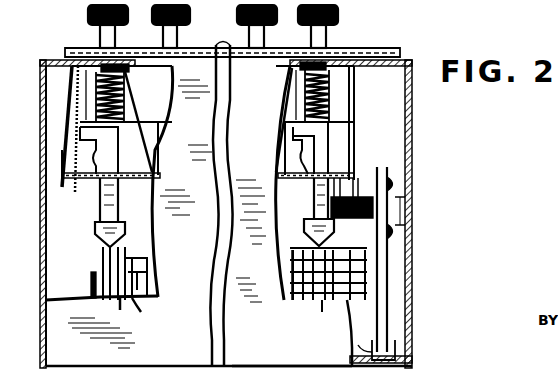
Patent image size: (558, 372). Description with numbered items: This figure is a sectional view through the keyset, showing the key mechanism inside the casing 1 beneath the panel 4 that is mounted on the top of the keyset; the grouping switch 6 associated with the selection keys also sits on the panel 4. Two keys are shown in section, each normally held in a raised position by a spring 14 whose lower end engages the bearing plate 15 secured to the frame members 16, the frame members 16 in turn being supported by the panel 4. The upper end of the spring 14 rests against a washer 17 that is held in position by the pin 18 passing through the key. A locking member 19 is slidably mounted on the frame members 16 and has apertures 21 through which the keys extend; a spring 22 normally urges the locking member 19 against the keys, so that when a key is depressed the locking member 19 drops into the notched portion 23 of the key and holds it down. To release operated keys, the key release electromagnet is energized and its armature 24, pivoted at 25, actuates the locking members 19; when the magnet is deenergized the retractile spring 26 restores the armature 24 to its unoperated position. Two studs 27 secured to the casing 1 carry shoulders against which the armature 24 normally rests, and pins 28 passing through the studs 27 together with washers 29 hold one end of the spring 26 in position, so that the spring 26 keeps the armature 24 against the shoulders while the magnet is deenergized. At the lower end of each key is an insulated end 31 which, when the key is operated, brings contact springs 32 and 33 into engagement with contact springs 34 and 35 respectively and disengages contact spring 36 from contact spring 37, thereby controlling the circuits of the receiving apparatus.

The keyset casing 1 is at (414, 118).
The panel 4 is at (248, 50).
The grouping switch 6 is at (80, 50).
The spring 14 is at (126, 95).
The bearing plate 15 is at (138, 113).
The frame members 16 is at (371, 111).
The washer 17 is at (187, 95).
The pin 18 is at (128, 69).
The locking member 19 is at (229, 160).
The apertures 21 is at (118, 178).
The spring 22 is at (62, 157).
The notched portion 23 is at (204, 148).
The armature 24 is at (376, 230).
The pivot 25 is at (371, 338).
The retractile spring 26 is at (363, 187).
The studs 27 is at (400, 210).
The pins 28 is at (313, 204).
The washers 29 is at (337, 187).
The insulated end 31 is at (96, 228).
The contact spring 32 is at (103, 248).
The contact spring 33 is at (124, 248).
The contact spring 34 is at (91, 277).
The contact spring 35 is at (224, 318).
The contact spring 36 is at (148, 272).
The contact spring 37 is at (345, 300).